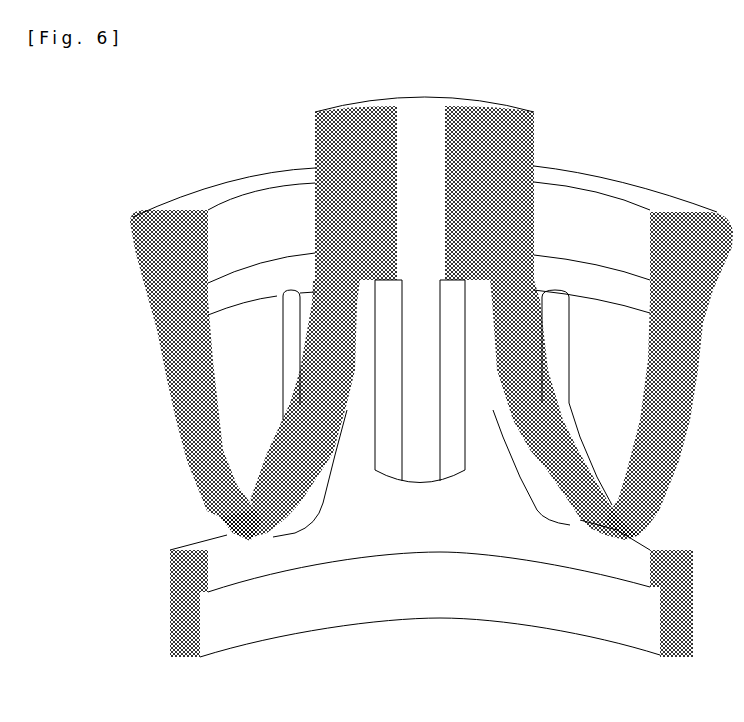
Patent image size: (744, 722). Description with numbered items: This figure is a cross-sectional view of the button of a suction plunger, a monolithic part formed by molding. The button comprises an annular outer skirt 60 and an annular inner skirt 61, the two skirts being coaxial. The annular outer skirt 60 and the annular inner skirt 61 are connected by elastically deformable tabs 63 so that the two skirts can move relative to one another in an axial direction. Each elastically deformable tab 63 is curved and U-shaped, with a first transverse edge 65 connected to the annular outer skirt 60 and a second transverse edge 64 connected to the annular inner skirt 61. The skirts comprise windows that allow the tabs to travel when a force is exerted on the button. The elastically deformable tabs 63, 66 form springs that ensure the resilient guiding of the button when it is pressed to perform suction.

The annular outer skirt 60 is at (157, 258).
The annular inner skirt 61 is at (437, 600).
The elastically deformable tab 63 is at (203, 447).
The second transverse edge 64 is at (522, 277).
The first transverse edge 65 is at (187, 305).
The elastically deformable tab 66 is at (542, 450).